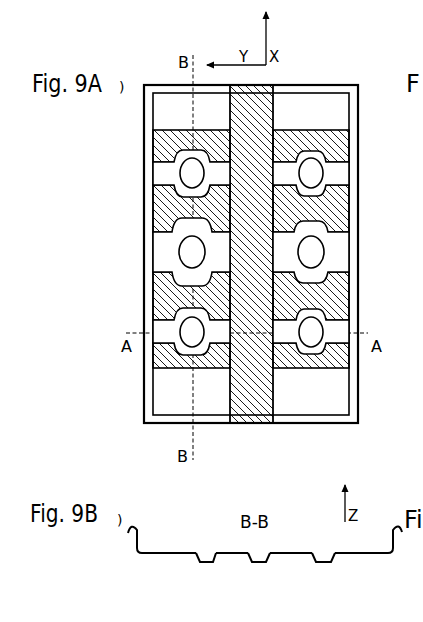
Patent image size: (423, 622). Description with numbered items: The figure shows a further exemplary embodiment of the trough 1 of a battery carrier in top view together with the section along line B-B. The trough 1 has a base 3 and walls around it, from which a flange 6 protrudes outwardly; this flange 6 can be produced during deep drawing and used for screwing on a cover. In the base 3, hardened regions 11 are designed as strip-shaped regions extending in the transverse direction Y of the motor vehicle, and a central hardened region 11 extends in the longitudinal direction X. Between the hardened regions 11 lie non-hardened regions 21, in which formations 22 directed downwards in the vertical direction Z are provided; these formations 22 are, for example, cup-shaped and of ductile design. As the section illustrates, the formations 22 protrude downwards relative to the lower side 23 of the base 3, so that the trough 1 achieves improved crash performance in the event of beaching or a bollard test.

In FIG. 9A, the trough 1 is at (143, 243).
In FIG. 9B, the base 3 is at (290, 554).
In FIG. 9A, the flange 6 is at (360, 98).
In FIG. 9A, the hardened region 11 is at (258, 126).
In FIG. 9A, the non-hardened region 21 is at (318, 107).
In FIG. 9A, the formation 22 is at (311, 252).
In FIG. 9B, the formation 22 is at (205, 564).
In FIG. 9B, the lower side 23 is at (288, 560).